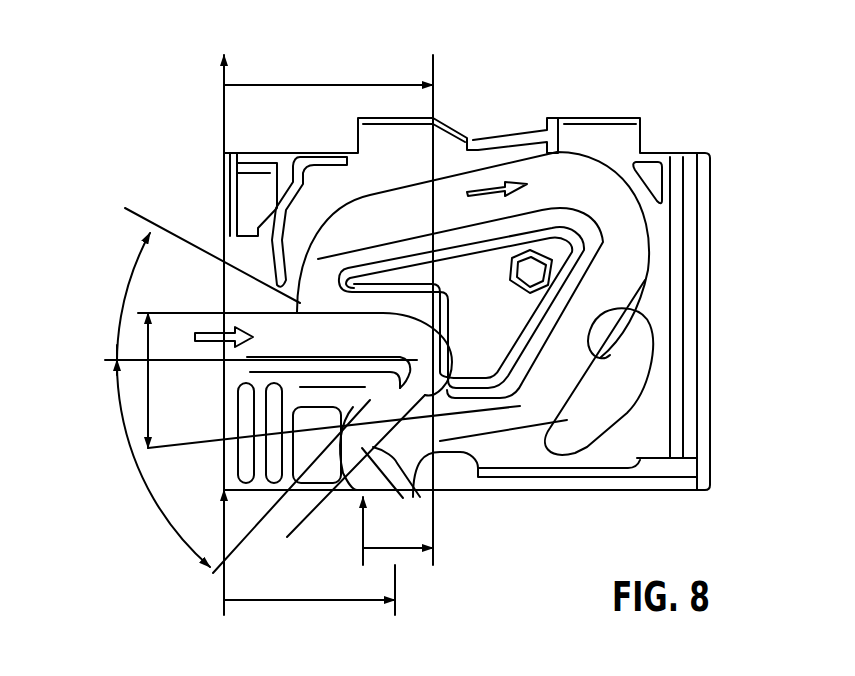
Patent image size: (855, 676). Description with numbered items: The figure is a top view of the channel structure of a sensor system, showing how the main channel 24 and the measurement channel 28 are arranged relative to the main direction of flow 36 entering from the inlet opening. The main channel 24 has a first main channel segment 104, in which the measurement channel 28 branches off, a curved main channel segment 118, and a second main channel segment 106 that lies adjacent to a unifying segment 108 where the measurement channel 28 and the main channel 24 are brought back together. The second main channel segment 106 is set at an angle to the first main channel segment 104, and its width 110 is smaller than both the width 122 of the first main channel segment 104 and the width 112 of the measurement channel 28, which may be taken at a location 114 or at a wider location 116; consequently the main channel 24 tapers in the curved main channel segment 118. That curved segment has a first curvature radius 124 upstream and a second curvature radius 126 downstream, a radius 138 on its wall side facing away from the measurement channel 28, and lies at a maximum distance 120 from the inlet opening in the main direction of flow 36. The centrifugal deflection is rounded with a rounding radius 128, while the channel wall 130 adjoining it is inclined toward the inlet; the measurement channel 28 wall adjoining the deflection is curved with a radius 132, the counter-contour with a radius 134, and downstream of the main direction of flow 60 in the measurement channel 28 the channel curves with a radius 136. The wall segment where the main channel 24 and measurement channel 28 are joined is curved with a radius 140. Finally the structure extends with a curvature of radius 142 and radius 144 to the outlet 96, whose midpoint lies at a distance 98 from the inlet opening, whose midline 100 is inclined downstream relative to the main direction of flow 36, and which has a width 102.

The main channel 24 is at (263, 305).
The measurement channel 28 is at (540, 210).
The main direction of flow 36 is at (195, 333).
The main direction of flow in measurement channel 60 is at (530, 188).
The outlet 96 is at (357, 498).
The distance 98 is at (295, 601).
The midline of outlet 100 is at (437, 535).
The width of outlet 102 is at (405, 549).
The first main channel segment 104 is at (240, 356).
The second main channel segment 106 is at (262, 427).
The unifying segment 108 is at (428, 469).
The width of second main channel segment 110 is at (384, 419).
The width of measurement channel 112 is at (453, 437).
The location 114 is at (567, 420).
The wider location 116 is at (603, 362).
The curved main channel segment 118 is at (462, 330).
The maximum distance 120 is at (328, 103).
The width of first main channel segment 122 is at (135, 338).
The first curvature radius 124 is at (397, 294).
The second curvature radius 126 is at (447, 303).
The rounding radius 128 is at (385, 313).
The channel wall 130 is at (298, 302).
The radius 132 is at (300, 234).
The radius 134 is at (340, 272).
The radius 136 is at (603, 227).
The radius 138 is at (362, 335).
The radius 140 is at (458, 380).
The radius 142 is at (265, 520).
The radius 144 is at (510, 493).